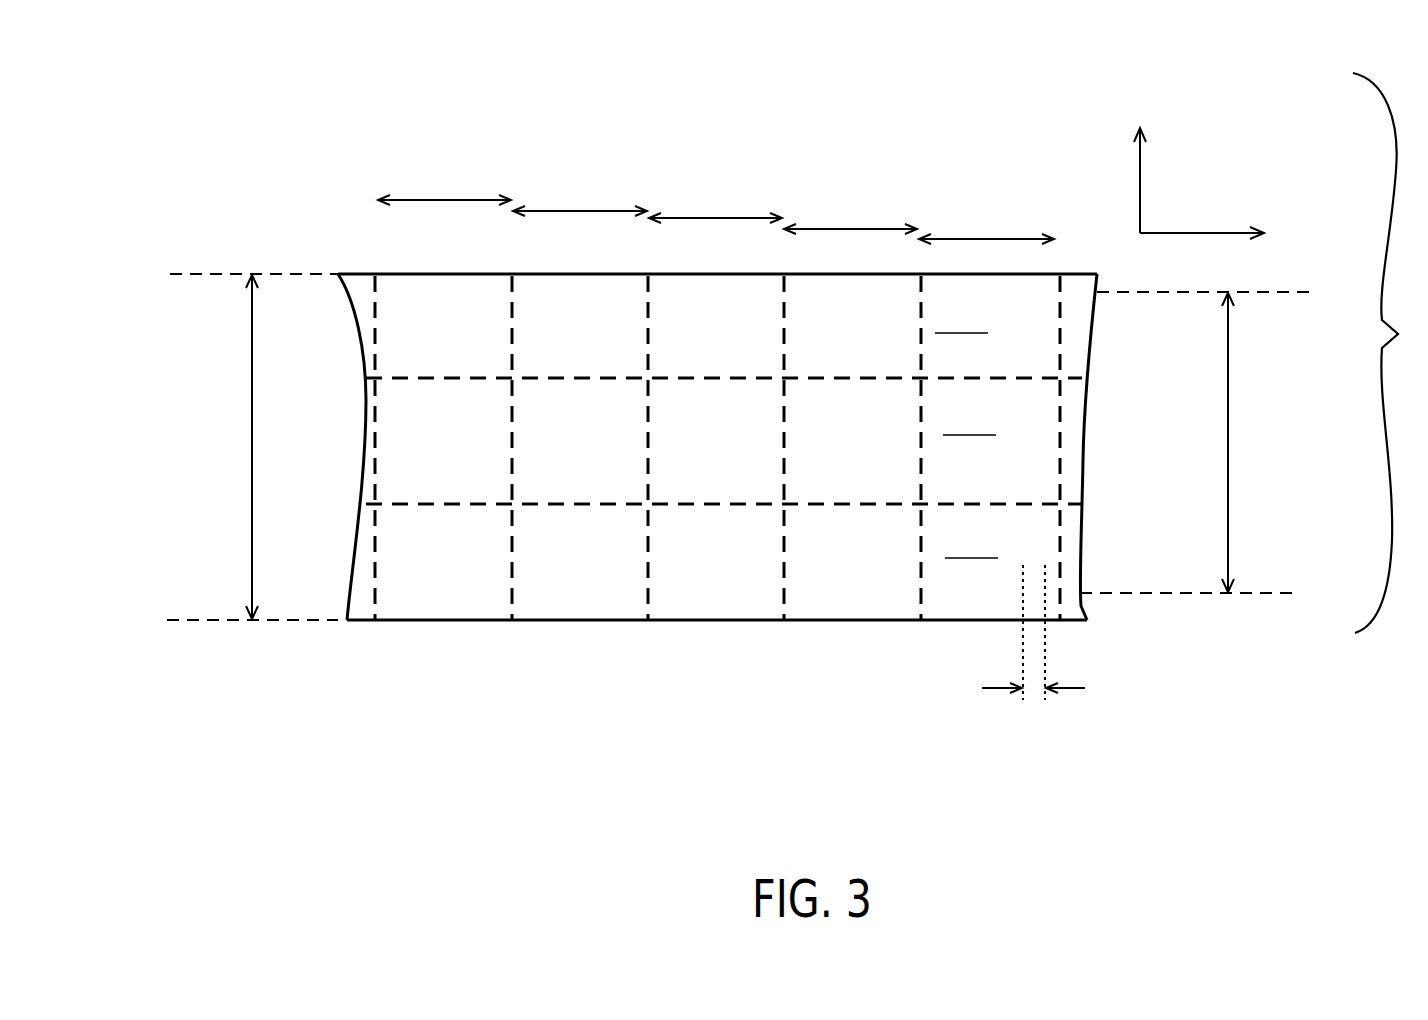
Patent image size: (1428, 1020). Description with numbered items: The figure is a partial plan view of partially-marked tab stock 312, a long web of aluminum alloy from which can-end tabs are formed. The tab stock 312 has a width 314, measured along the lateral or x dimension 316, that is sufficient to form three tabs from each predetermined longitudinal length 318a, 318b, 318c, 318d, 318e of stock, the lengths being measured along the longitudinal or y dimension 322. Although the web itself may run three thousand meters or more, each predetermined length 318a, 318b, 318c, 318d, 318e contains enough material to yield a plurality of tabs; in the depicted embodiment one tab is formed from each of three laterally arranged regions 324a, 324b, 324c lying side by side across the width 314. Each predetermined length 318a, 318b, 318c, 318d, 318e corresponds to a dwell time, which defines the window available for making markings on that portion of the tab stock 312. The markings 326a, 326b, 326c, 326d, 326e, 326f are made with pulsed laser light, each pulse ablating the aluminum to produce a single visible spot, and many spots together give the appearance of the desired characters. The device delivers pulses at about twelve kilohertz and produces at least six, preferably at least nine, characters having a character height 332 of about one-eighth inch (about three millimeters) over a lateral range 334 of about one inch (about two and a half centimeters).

The tab stock 312 is at (582, 621).
The width 314 is at (252, 425).
The x dimension 316 is at (1140, 156).
The predetermined longitudinal length 318a is at (975, 239).
The predetermined longitudinal length 318b is at (835, 229).
The predetermined longitudinal length 318c is at (708, 218).
The predetermined longitudinal length 318d is at (577, 210).
The predetermined longitudinal length 318e is at (437, 200).
The y dimension 322 is at (1217, 233).
The laterally arranged region 324a is at (961, 318).
The laterally arranged region 324b is at (969, 420).
The laterally arranged region 324c is at (971, 543).
The marking 326a is at (1058, 272).
The marking 326b is at (1053, 437).
The marking 326c is at (1047, 553).
The marking 326d is at (852, 553).
The marking 326e is at (855, 452).
The marking 326f is at (832, 300).
The character height 332 is at (1070, 689).
The lateral range 334 is at (1228, 388).